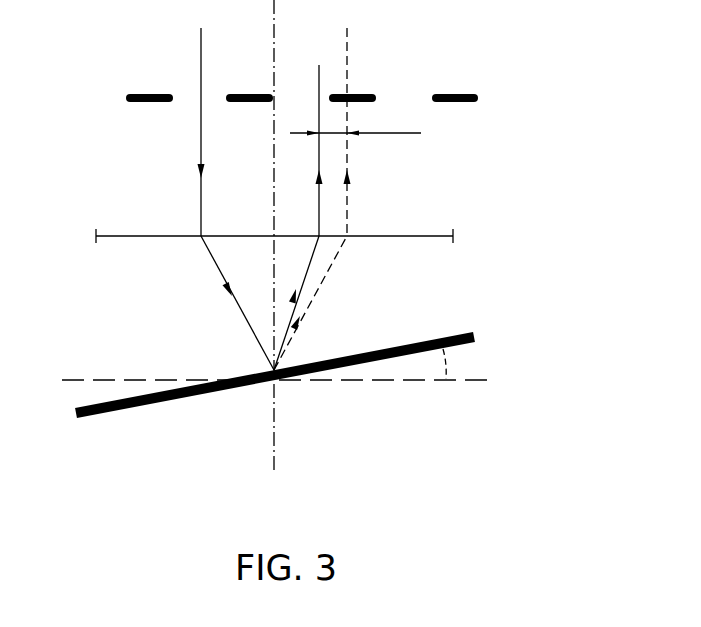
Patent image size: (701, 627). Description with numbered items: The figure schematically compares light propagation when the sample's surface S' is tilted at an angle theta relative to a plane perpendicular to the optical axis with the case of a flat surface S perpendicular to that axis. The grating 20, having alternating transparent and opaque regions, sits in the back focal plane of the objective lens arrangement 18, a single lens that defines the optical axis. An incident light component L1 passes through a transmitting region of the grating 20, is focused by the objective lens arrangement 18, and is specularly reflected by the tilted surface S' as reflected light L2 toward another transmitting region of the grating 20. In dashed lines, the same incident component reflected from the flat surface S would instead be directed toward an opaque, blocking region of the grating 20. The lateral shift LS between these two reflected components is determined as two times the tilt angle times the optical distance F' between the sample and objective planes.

The grating 20 is at (150, 96).
The objective lens arrangement 18 is at (448, 217).
The illuminating light L1 is at (201, 131).
The specularly reflected light L2 is at (320, 65).
The lateral shift LS is at (355, 122).
The tilted sample surface S' is at (298, 343).
The sample surface S is at (295, 405).